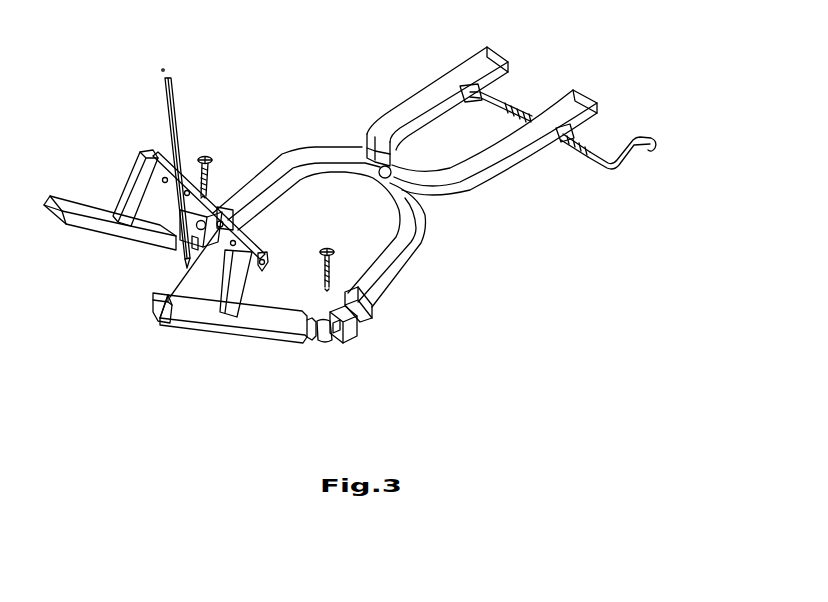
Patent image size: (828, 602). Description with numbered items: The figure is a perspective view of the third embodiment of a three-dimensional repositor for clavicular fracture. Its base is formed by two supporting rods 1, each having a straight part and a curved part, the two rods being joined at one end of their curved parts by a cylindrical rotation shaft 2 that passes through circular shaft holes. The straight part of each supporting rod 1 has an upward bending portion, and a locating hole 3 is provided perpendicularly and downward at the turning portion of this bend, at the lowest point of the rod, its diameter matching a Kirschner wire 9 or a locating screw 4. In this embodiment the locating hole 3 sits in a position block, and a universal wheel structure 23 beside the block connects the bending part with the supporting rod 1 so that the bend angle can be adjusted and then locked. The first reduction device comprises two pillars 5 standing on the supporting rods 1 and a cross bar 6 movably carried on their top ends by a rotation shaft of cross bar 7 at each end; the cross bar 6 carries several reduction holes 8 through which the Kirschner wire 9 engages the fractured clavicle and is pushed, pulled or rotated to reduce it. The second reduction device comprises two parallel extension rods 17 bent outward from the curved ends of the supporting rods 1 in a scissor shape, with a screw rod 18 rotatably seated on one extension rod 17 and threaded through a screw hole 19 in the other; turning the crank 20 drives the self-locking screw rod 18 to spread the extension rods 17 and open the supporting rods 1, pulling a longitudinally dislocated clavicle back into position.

The supporting rod 1 is at (243, 173).
The rotation shaft 2 is at (365, 147).
The locating hole 3 is at (353, 337).
The locating screw 4 is at (337, 280).
The pillar 5 is at (130, 190).
The cross bar 6 is at (160, 313).
The rotation shaft of cross bar 7 is at (260, 270).
The reduction hole 8 is at (225, 250).
The Kirschner wire 9 is at (168, 77).
The extension rod 17 is at (420, 100).
The screw rod 18 is at (512, 102).
The screw hole 19 is at (574, 130).
The crank 20 is at (637, 135).
The universal wheel structure 23 is at (318, 347).